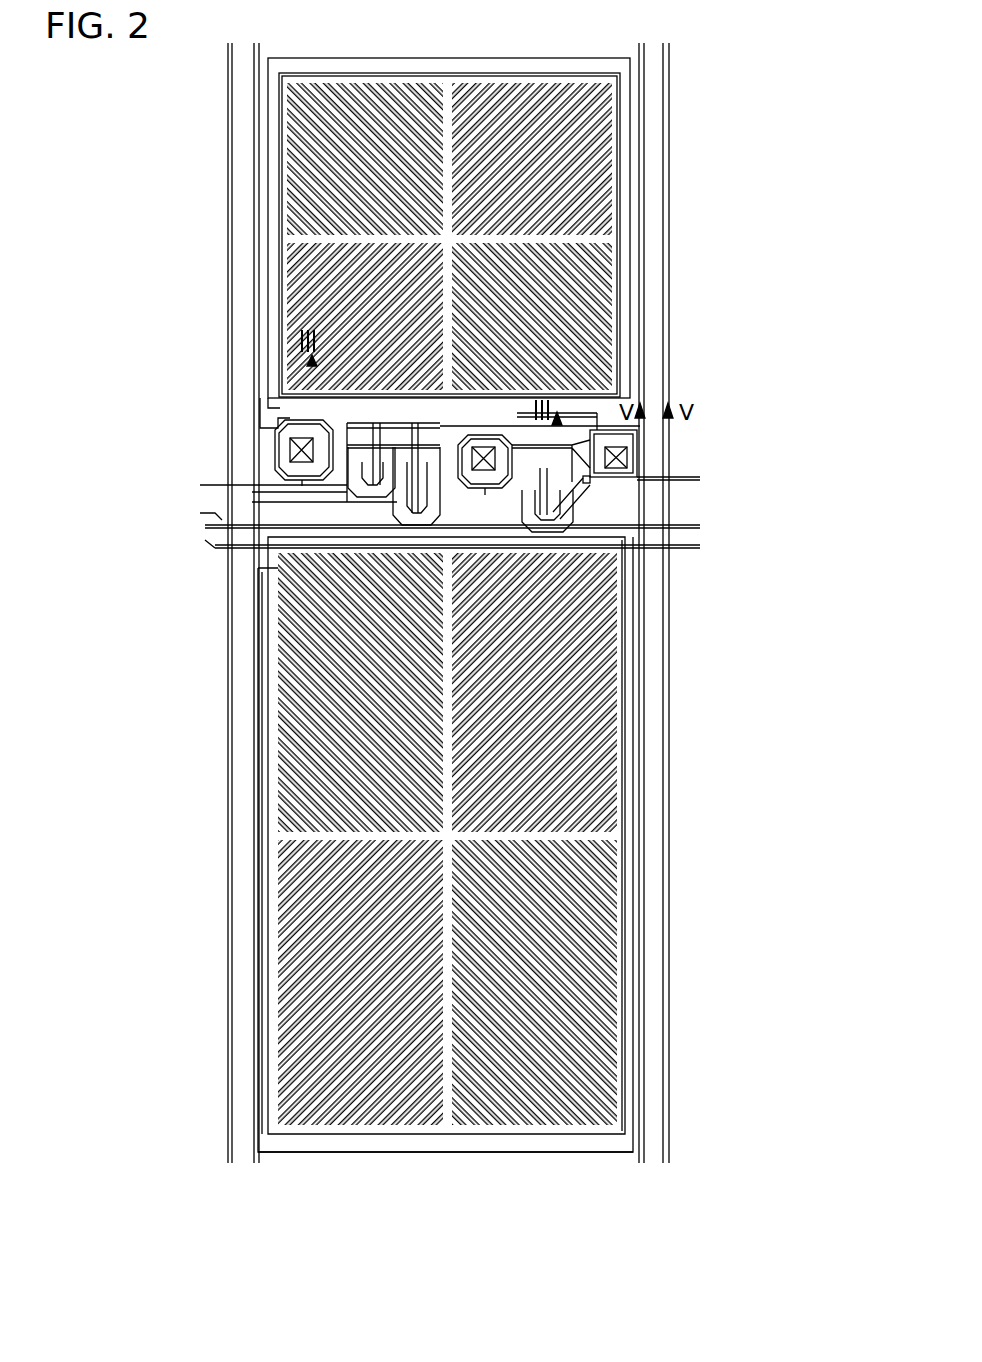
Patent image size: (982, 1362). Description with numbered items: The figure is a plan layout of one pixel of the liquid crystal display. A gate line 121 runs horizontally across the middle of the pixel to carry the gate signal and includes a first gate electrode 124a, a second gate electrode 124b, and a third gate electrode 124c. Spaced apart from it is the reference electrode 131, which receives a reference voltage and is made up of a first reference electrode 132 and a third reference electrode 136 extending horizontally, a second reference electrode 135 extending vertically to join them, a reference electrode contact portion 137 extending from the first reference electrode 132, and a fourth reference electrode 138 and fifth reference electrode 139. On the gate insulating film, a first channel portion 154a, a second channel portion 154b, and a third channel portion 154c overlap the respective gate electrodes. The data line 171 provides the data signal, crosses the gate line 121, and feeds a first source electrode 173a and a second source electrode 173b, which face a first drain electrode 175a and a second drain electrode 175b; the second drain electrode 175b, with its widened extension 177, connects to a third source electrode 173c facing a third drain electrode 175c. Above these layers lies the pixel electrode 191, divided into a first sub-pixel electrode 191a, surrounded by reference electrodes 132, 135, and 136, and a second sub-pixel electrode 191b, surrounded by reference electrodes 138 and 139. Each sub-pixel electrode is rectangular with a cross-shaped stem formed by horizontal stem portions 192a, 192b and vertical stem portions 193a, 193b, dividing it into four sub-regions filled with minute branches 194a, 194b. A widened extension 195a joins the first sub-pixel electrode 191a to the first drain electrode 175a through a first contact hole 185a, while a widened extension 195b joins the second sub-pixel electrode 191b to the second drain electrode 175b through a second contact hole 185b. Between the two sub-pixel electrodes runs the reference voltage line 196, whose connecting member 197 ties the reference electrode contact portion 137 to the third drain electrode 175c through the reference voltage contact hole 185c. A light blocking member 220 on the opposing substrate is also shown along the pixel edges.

The gate line 121 is at (240, 522).
The first gate electrode 124a is at (240, 396).
The second gate electrode 124b is at (335, 415).
The third gate electrode 124c is at (655, 510).
The reference electrode 131 is at (122, 1026).
The first reference electrode 132 is at (470, 400).
The second reference electrode 135 is at (630, 268).
The third reference electrode 136 is at (528, 58).
The reference electrode contact portion 137 is at (600, 445).
The fourth reference electrode 138 is at (640, 741).
The fifth reference electrode 139 is at (562, 1152).
The first channel portion 154a is at (415, 452).
The second channel portion 154b is at (376, 440).
The third channel portion 154c is at (520, 520).
The data line 171 is at (262, 95).
The first source electrode 173a is at (345, 487).
The second source electrode 173b is at (430, 540).
The third source electrode 173c is at (650, 485).
The first drain electrode 175a is at (275, 428).
The second drain electrode 175b is at (300, 520).
The third drain electrode 175c is at (560, 520).
The widened extension 177 is at (540, 455).
The first contact hole 185a is at (292, 450).
The second contact hole 185b is at (490, 447).
The reference voltage contact hole 185c is at (628, 452).
The pixel electrode 191 is at (782, 1076).
The first sub-pixel electrode 191a is at (265, 153).
The second sub-pixel electrode 191b is at (265, 728).
The horizontal stem portion 192a is at (588, 239).
The horizontal stem portion 192b is at (578, 840).
The vertical stem portion 193a is at (447, 95).
The vertical stem portion 193b is at (445, 1120).
The minute branches 194a is at (588, 176).
The minute branches 194b is at (588, 870).
The widened extension 195a is at (290, 462).
The widened extension 195b is at (495, 465).
The reference voltage line 196 is at (641, 477).
The connecting member 197 is at (600, 490).
The light blocking member 220 is at (668, 185).